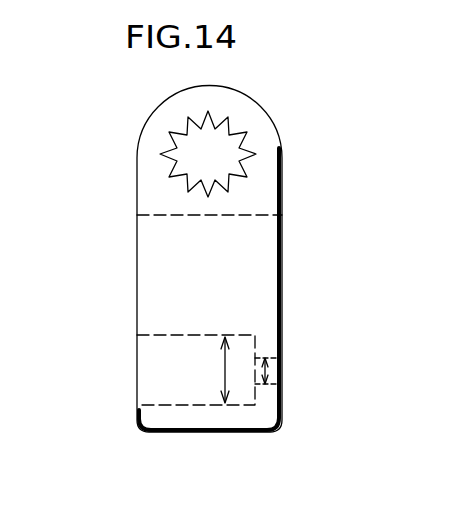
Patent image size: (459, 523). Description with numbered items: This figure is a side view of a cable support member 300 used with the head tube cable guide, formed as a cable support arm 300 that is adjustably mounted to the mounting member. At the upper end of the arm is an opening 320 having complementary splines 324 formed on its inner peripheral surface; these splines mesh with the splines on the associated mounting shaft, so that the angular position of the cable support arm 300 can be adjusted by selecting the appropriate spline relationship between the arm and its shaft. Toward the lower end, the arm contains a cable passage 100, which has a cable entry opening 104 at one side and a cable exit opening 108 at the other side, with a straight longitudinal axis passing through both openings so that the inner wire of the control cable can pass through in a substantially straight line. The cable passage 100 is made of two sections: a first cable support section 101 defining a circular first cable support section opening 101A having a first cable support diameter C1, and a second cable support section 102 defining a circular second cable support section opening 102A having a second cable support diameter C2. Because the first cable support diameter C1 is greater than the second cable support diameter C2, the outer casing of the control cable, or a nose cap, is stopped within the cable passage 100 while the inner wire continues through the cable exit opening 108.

The cable support member 300 is at (283, 278).
The opening 320 is at (233, 172).
The complementary splines 324 is at (249, 167).
The cable passage 100 is at (197, 333).
The cable entry opening 104 is at (135, 384).
The first cable support section opening 101A is at (136, 403).
The first cable support section 101 is at (162, 433).
The second cable support section 102 is at (258, 433).
The second cable support section opening 102A is at (262, 386).
The cable exit opening 108 is at (283, 372).
The first cable support diameter C1 is at (224, 372).
The second cable support diameter C2 is at (271, 360).